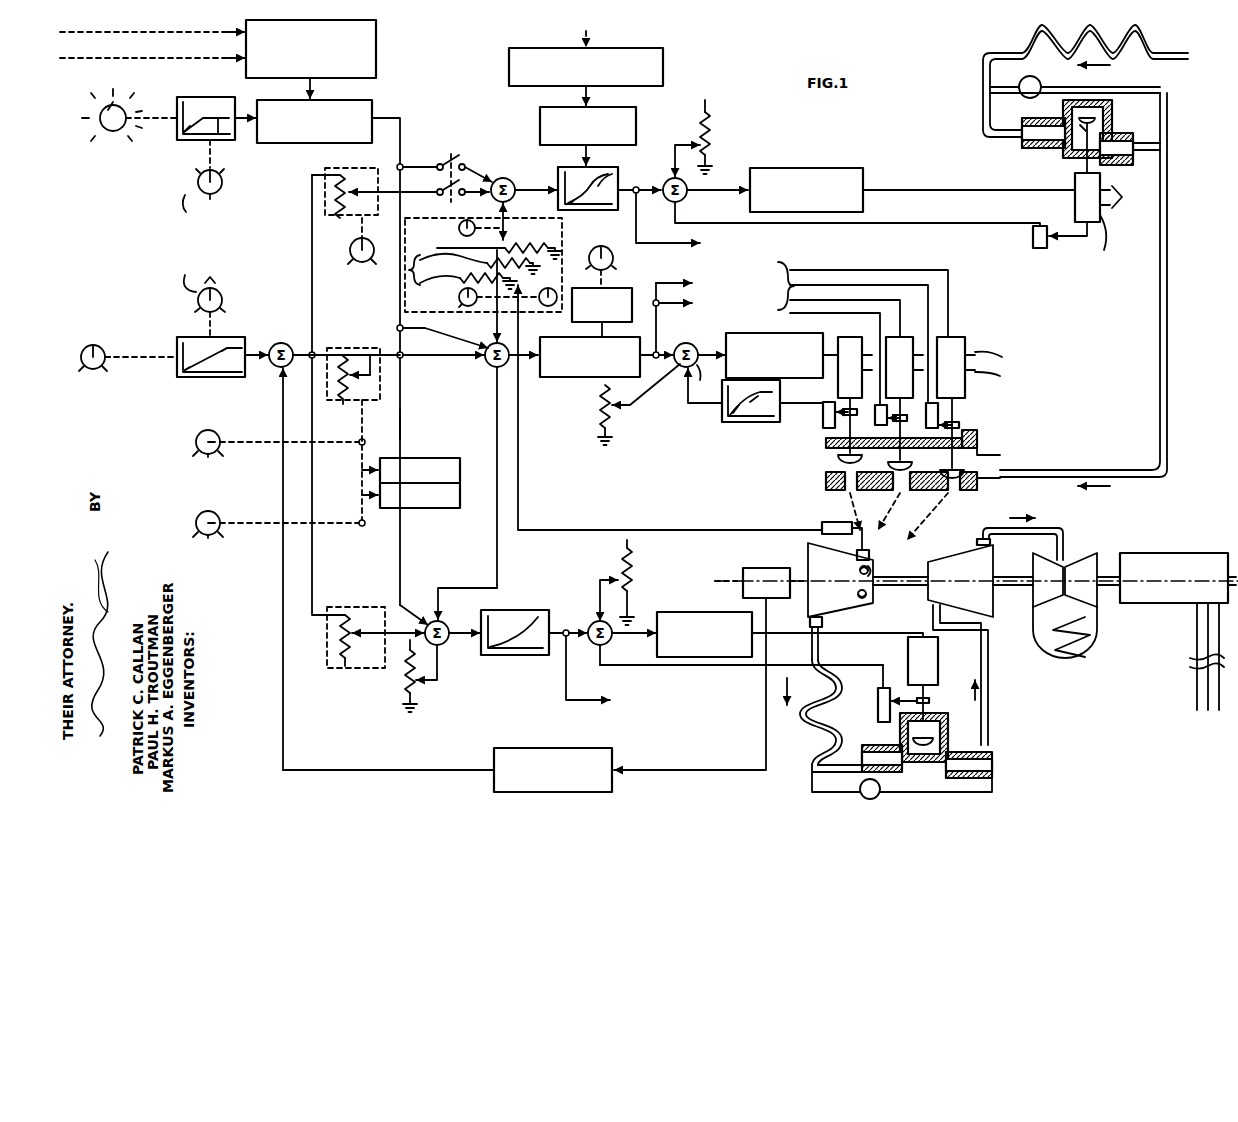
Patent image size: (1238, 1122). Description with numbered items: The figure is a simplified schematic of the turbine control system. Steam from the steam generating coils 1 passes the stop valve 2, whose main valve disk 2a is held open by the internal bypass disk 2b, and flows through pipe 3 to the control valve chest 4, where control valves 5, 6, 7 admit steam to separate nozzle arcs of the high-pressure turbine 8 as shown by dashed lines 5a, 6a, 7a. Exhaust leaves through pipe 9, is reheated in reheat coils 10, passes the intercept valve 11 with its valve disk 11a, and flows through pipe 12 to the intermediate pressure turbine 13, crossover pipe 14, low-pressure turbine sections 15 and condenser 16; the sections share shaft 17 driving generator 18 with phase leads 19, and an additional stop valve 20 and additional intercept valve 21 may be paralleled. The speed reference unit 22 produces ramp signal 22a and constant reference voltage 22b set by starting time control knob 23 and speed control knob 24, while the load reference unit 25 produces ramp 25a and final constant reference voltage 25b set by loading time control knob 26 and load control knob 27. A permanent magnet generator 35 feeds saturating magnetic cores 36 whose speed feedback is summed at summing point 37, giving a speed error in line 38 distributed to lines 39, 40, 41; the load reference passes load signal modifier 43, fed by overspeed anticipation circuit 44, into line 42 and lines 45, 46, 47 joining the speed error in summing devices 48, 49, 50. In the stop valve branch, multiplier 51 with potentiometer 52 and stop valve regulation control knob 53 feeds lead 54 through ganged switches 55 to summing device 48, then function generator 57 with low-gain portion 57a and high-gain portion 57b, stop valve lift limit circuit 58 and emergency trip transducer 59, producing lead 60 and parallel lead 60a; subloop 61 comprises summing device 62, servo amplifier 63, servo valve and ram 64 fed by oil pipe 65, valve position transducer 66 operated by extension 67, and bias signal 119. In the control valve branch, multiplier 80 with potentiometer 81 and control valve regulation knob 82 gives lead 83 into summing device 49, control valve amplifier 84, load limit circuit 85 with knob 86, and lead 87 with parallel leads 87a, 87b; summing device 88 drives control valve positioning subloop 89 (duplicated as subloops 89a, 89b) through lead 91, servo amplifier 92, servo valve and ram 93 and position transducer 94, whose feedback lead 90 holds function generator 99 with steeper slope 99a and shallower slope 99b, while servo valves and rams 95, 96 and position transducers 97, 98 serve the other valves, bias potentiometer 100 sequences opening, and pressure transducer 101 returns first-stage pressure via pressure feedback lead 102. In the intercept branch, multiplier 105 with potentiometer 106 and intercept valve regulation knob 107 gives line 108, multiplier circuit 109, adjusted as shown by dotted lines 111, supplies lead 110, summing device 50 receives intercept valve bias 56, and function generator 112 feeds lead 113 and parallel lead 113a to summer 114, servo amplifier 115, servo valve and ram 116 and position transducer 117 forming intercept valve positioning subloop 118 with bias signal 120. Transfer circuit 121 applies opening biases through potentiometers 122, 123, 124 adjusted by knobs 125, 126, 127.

The steam generating coils 1 is at (1097, 32).
The stop valve 2 is at (1062, 112).
The main valve disk 2a is at (1100, 108).
The internal bypass disk 2b is at (1076, 130).
The pipe 3 is at (1092, 466).
The control valve chest 4 is at (977, 437).
The control valve 5 is at (948, 466).
The dashed line 5a is at (938, 506).
The control valve 6 is at (912, 462).
The dashed line 6a is at (886, 515).
The control valve 7 is at (838, 460).
The dashed line 7a is at (848, 502).
The high-pressure turbine 8 is at (845, 608).
The pipe 9 is at (811, 647).
The reheat coils 10 is at (826, 702).
The intercept valve 11 is at (880, 766).
The valve disk 11a is at (929, 731).
The pipe 12 is at (990, 658).
The intermediate pressure turbine 13 is at (993, 605).
The crossover pipe 14 is at (1064, 528).
The low-pressure turbine sections 15 is at (1082, 559).
The condenser 16 is at (1098, 627).
The shaft 17 is at (883, 579).
The generator 18 is at (1168, 553).
The phase leads 19 is at (1190, 664).
The additional stop valve 20 is at (1022, 96).
The additional intercept valve 21 is at (860, 787).
The speed reference unit 22 is at (177, 352).
The ramp signal 22a is at (184, 342).
The constant reference voltage 22b is at (228, 347).
The starting time control knob 23 is at (225, 296).
The speed control knob 24 is at (88, 346).
The load reference unit 25 is at (237, 100).
The ramp 25a is at (177, 130).
The final constant reference voltage 25b is at (214, 135).
The loading time control knob 26 is at (222, 182).
The load control knob 27 is at (103, 110).
The permanent magnet generator 35 is at (778, 568).
The saturating magnetic cores 36 is at (524, 748).
The summing point 37 is at (290, 367).
The speed error line 38 is at (297, 346).
The stop valve branch line 39 is at (312, 250).
The control valve branch line 40 is at (315, 352).
The intercept valve branch line 41 is at (312, 576).
The load reference line 42 is at (396, 121).
The load signal modifier 43 is at (372, 102).
The overspeed anticipation circuit 44 is at (376, 52).
The load signal line 45 is at (417, 167).
The load signal line 46 is at (446, 335).
The load signal line 47 is at (400, 425).
The summing device 48 is at (505, 177).
The summing device 49 is at (485, 365).
The summing device 50 is at (446, 644).
The multiplier 51 is at (355, 168).
The potentiometer 52 is at (332, 215).
The stop valve regulation control knob 53 is at (369, 246).
The lead 54 is at (412, 192).
The ganged switches 55 is at (460, 159).
The intercept valve bias 56 is at (418, 687).
The function generator 57 is at (557, 176).
The first part of the curve 57a is at (572, 211).
The remaining portion of the curve 57b is at (600, 178).
The stop valve lift limit circuit 58 is at (539, 119).
The emergency trip transducer 59 is at (663, 66).
The lead 60 is at (639, 179).
The parallel connected lead 60a is at (636, 214).
The stop valve positioning subloop 61 is at (956, 210).
The summing device 62 is at (684, 196).
The servo amplifier 63 is at (863, 205).
The servo valve and valve positioning ram 64 is at (1074, 203).
The pipe 65 is at (1124, 197).
The valve position transducer 66 is at (1032, 240).
The extension 67 is at (1082, 236).
The multiplier 80 is at (372, 348).
The potentiometer 81 is at (341, 399).
The control valve regulation knob 82 is at (216, 432).
The lead 83 is at (432, 357).
The control valve amplifier 84 is at (565, 377).
The load limit circuit 85 is at (632, 297).
The load limit knob 86 is at (612, 252).
The lead 87 is at (653, 360).
The parallel lead 87a is at (670, 283).
The parallel lead 87b is at (658, 342).
The summing device 88 is at (692, 345).
The control valve positioning subloop 89 is at (808, 394).
The control valve positioning subloop 89a is at (835, 279).
The control valve positioning subloop 89b is at (872, 298).
The control valve position feedback lead 90 is at (706, 406).
The lead 91 is at (710, 381).
The servo amplifier 92 is at (823, 334).
The servo valve and ram 93 is at (843, 337).
The position transducer 94 is at (822, 413).
The servo valve and ram 95 is at (900, 337).
The servo valve and ram 96 is at (960, 337).
The position transducer 97 is at (875, 416).
The position transducer 98 is at (940, 409).
The function generator 99 is at (722, 422).
The steeper slope 99a is at (741, 424).
The shallower slope 99b is at (753, 426).
The bias potentiometer 100 is at (615, 412).
The pressure transducer 101 is at (820, 527).
The pressure feedback lead 102 is at (600, 528).
The multiplier 105 is at (345, 670).
The potentiometer 106 is at (328, 660).
The intercept valve regulation knob 107 is at (222, 527).
The line 108 is at (400, 610).
The multiplier circuit 109 is at (460, 503).
The lead 110 is at (425, 615).
The dotted lines 111 is at (361, 495).
The function generator 112 is at (535, 656).
The lead 113 is at (568, 640).
The lead 113a is at (580, 702).
The summer 114 is at (598, 619).
The servo amplifier 115 is at (712, 612).
The servo valve and ram 116 is at (935, 659).
The position transducer 117 is at (877, 701).
The intercept valve positioning subloop 118 is at (872, 657).
The bias signal 119 is at (701, 130).
The bias signal 120 is at (633, 566).
The transfer circuit 121 is at (474, 215).
The potentiometer 122 is at (522, 246).
The potentiometer 123 is at (473, 278).
The potentiometer 124 is at (462, 304).
The knob 125 is at (458, 228).
The knob 126 is at (547, 306).
The knob 127 is at (476, 306).